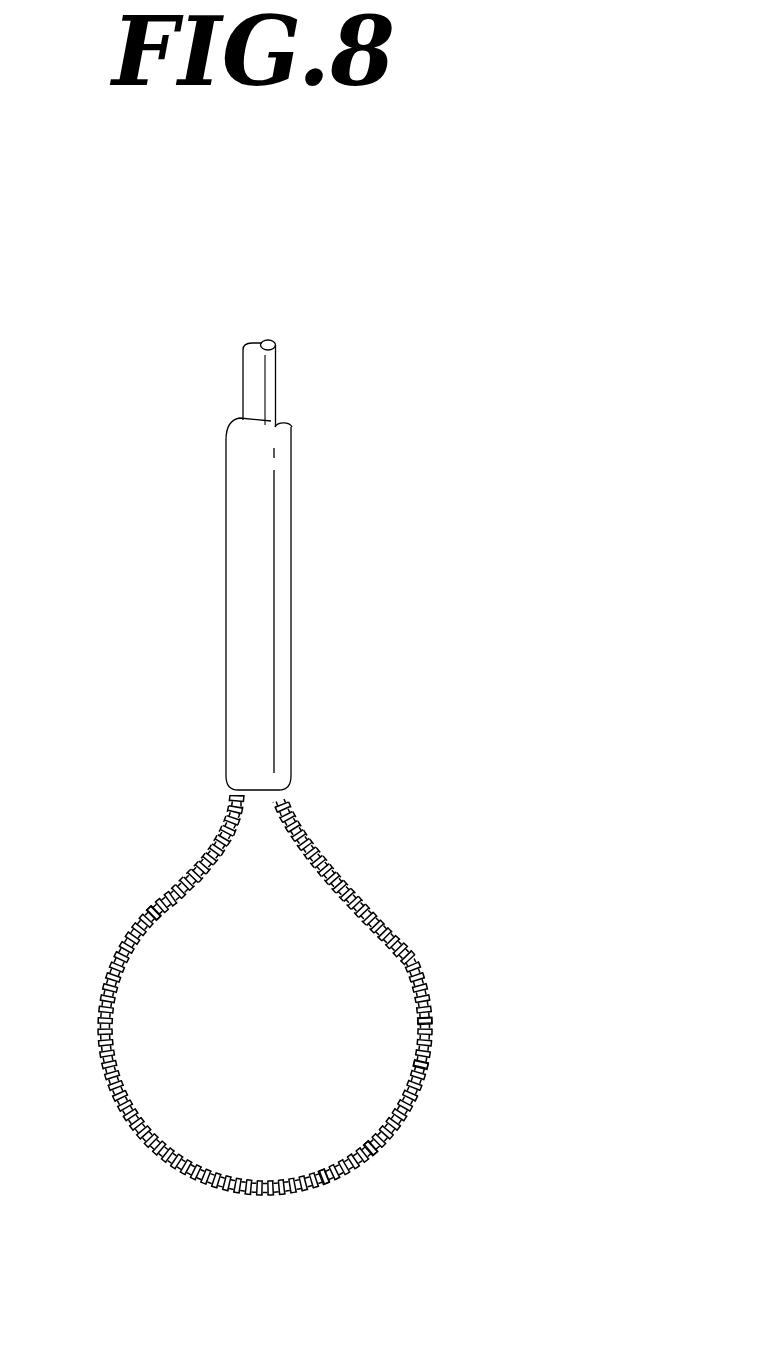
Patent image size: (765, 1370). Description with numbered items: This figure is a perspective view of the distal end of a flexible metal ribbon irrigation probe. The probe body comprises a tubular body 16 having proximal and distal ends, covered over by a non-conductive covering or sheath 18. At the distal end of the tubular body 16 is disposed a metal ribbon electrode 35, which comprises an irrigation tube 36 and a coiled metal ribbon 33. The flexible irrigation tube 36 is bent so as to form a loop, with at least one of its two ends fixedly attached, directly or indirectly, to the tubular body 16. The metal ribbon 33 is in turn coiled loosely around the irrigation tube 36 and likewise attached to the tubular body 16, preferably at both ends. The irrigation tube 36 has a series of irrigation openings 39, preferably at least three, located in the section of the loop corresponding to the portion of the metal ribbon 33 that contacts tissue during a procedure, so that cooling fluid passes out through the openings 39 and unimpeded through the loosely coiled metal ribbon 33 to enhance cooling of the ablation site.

The tubular body 16 is at (256, 385).
The non-conductive covering or sheath 18 is at (238, 578).
The coiled metal ribbon 33 is at (430, 1068).
The metal ribbon electrode 35 is at (364, 981).
The irrigation tube 36 is at (158, 922).
The irrigation openings 39 is at (330, 1185).